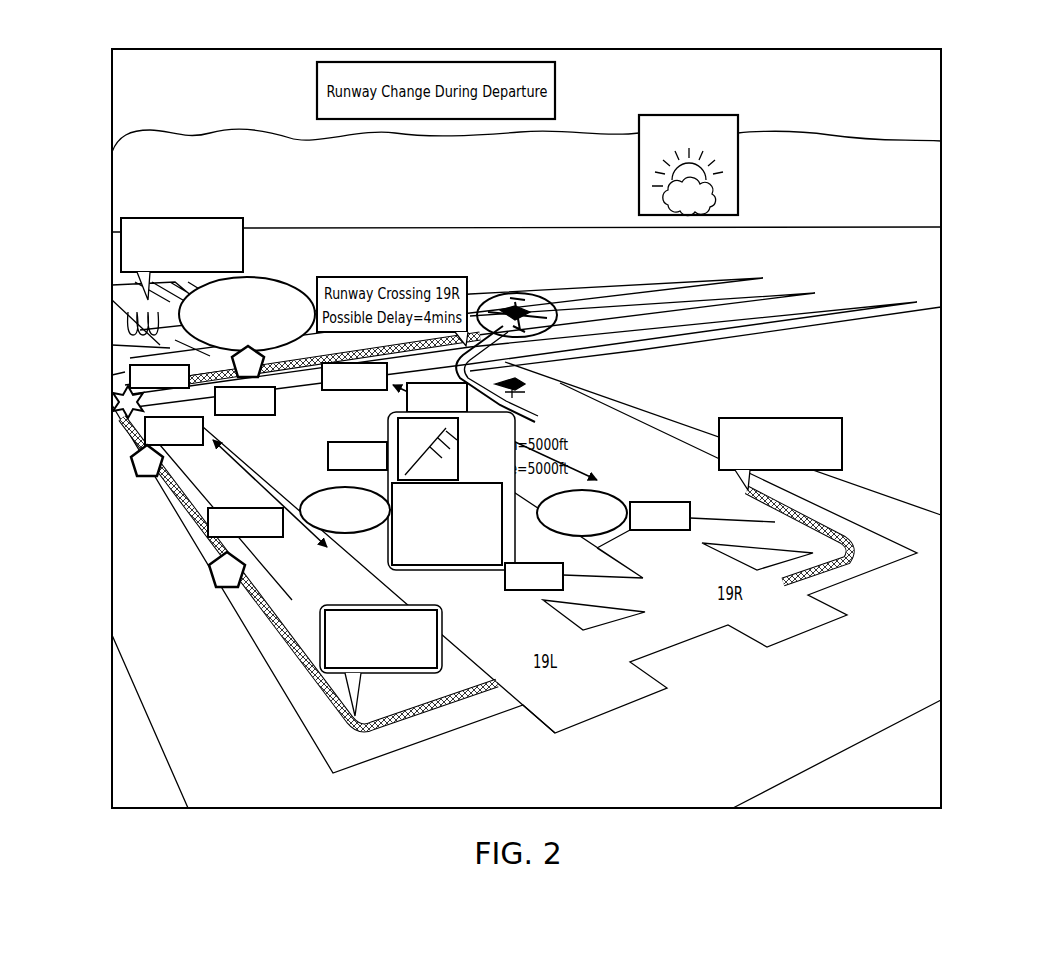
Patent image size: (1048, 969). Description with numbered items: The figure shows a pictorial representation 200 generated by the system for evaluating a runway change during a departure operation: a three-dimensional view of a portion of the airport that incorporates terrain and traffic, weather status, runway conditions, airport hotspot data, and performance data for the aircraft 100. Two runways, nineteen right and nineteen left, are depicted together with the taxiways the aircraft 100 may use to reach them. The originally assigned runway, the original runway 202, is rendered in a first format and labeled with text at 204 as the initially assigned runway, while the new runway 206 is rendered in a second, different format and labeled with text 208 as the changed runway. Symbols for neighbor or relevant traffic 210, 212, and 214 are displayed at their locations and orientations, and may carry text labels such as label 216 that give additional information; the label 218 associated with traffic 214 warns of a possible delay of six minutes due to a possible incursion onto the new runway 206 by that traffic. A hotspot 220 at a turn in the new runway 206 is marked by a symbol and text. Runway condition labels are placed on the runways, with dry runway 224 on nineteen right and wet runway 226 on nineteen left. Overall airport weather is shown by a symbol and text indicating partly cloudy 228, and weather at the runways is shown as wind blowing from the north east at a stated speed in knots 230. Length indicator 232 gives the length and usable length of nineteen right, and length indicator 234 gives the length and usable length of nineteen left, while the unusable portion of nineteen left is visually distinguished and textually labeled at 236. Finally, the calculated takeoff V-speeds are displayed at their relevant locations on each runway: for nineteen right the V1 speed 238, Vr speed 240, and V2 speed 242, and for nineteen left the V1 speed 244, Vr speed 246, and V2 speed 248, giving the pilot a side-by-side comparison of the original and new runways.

The aircraft 100 is at (506, 300).
The pictorial representation 200 is at (941, 82).
The original runway 202 is at (630, 442).
The original runway text label 204 is at (780, 418).
The new runway 206 is at (292, 654).
The new runway text label 208 is at (442, 653).
The traffic 210 is at (213, 582).
The traffic 212 is at (133, 458).
The traffic 214 is at (128, 332).
The traffic label 216 is at (208, 527).
The delay label 218 is at (283, 278).
The hotspot 220 is at (130, 370).
The dry runway label 224 is at (616, 500).
The wet runway label 226 is at (349, 536).
The partly cloudy weather indication 228 is at (738, 171).
The wind indication 230 is at (515, 532).
The length indicator 232 is at (522, 424).
The length indicator 234 is at (318, 534).
The unusable portion indication 236 is at (190, 218).
The V1 speed for runway 19R 238 is at (660, 531).
The Vr speed for runway 19R 240 is at (523, 397).
The V2 speed for runway 19R 242 is at (352, 391).
The V1 speed for runway 19L 244 is at (531, 591).
The Vr speed for runway 19L 246 is at (340, 476).
The V2 speed for runway 19L 248 is at (143, 402).